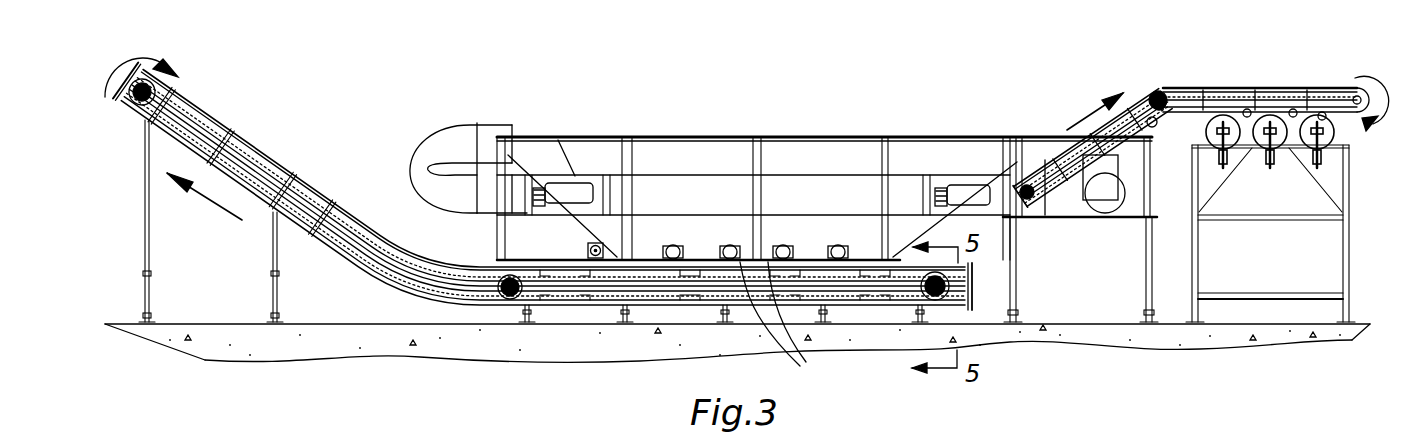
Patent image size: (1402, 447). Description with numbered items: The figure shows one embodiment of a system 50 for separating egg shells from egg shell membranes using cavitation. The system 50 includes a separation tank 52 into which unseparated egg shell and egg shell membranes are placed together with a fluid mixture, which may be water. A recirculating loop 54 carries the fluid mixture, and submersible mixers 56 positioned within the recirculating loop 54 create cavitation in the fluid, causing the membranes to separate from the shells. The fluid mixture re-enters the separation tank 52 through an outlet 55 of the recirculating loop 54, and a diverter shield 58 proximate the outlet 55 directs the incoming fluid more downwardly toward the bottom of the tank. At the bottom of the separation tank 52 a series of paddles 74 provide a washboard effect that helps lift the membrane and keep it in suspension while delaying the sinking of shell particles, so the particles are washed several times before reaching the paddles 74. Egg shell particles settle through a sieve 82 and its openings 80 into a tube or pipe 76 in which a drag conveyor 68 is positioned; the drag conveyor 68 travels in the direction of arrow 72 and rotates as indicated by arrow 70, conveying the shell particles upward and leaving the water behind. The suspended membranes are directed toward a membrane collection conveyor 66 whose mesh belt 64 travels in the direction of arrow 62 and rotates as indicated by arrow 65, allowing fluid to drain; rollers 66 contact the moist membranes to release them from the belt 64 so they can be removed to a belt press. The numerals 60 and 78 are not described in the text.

The system 50 is at (1190, 40).
The separation tank 52 is at (698, 124).
The recirculating loop 54 is at (423, 189).
The outlet 55 is at (510, 138).
The submersible mixers 56 is at (578, 186).
The diverter shield 58 is at (558, 140).
The incline conveyor 60 is at (1128, 96).
The arrow 62 is at (1085, 112).
The mesh belt 64 is at (1340, 117).
The arrow 65 is at (1377, 74).
The membrane collection conveyor 66 is at (1207, 126).
The drag conveyor 68 is at (207, 121).
The arrow 70 is at (120, 60).
The arrow 72 is at (213, 207).
The paddles 74 is at (858, 233).
The tube or pipe 76 is at (483, 265).
The idler roller 78 is at (590, 247).
The openings 80 is at (800, 366).
The sieve 82 is at (973, 280).